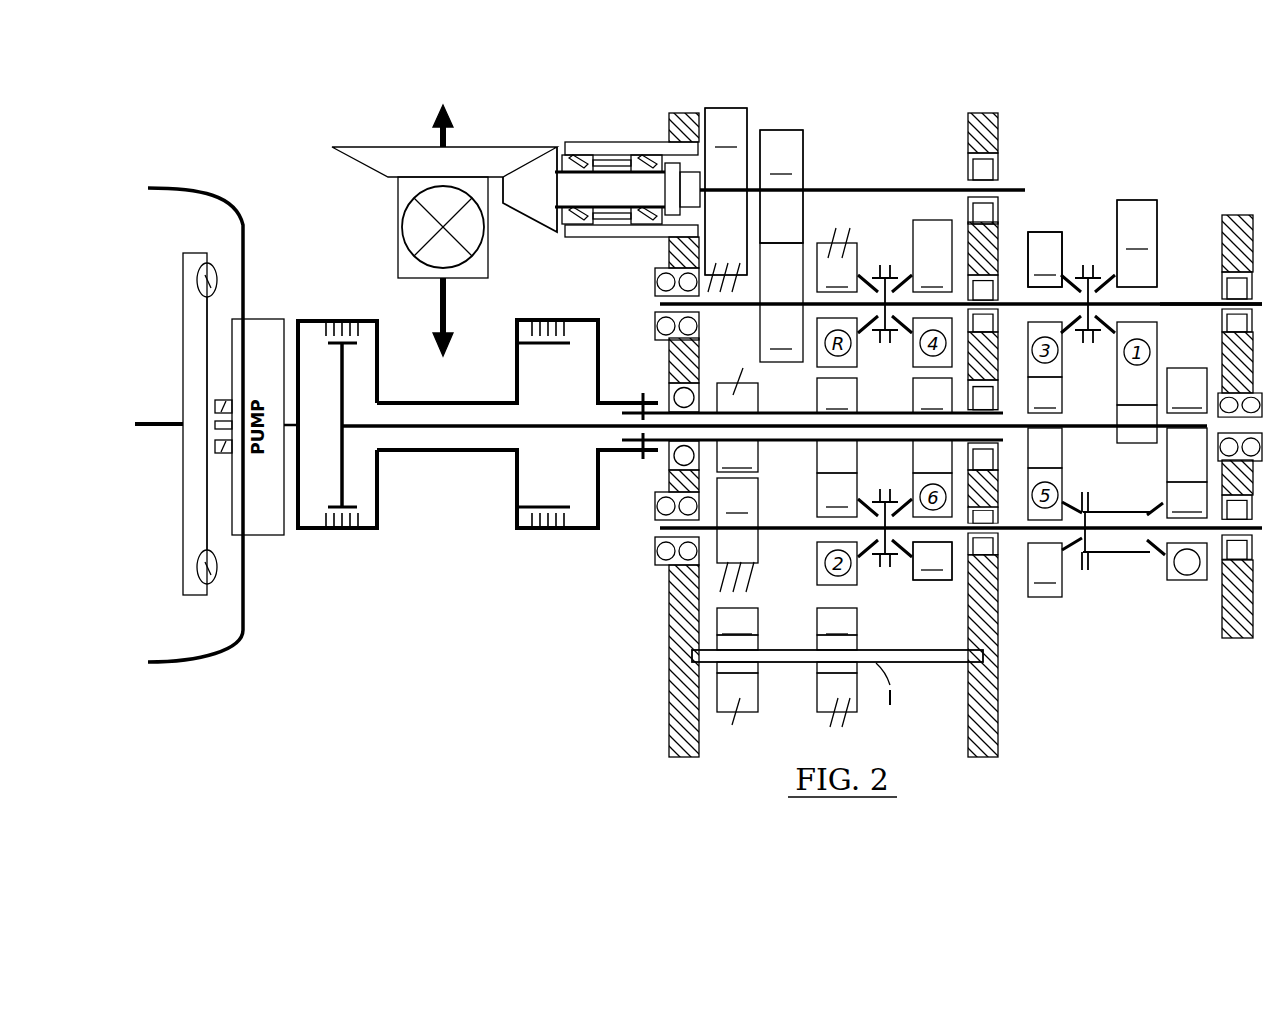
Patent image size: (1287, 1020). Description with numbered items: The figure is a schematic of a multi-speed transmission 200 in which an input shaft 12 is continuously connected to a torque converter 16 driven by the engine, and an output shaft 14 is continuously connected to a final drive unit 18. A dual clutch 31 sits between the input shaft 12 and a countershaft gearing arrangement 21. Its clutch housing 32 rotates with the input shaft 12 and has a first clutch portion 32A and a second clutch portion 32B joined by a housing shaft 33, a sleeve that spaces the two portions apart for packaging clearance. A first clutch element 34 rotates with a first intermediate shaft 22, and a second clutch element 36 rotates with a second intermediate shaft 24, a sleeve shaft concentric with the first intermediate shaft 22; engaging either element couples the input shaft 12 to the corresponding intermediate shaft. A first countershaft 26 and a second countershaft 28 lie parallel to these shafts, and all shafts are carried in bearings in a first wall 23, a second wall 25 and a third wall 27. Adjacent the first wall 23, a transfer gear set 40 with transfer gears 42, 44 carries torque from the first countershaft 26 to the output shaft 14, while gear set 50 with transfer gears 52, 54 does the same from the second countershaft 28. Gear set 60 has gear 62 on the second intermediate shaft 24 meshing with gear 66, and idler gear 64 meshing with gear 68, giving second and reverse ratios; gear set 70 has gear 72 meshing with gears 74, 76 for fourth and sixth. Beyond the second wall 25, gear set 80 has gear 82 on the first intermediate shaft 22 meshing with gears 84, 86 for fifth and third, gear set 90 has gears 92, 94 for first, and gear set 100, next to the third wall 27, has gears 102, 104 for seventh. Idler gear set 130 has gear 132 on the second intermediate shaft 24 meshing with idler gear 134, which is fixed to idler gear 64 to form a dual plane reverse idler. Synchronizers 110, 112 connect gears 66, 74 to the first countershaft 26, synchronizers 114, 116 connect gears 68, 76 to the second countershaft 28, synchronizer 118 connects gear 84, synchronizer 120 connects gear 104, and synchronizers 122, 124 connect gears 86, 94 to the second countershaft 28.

The multi-speed transmission 200 is at (300, 157).
The torque converter 16 is at (183, 520).
The input shaft 12 is at (292, 427).
The first clutch element 34 is at (340, 367).
The dual clutch 31 is at (352, 547).
The housing shaft 33 is at (473, 402).
The second clutch element 36 is at (570, 318).
The clutch housing 32 is at (403, 464).
The first clutch portion 32A is at (377, 530).
The second clutch portion 32B is at (516, 487).
The first intermediate shaft 22 is at (545, 427).
The final drive unit 18 is at (525, 118).
The output shaft 14 is at (920, 190).
The first support wall 23 is at (668, 602).
The second support wall 25 is at (1003, 722).
The third support wall 27 is at (1237, 640).
The gear set 60 is at (832, 216).
The second countershaft 28 is at (1183, 303).
The first countershaft 26 is at (778, 530).
The transfer gear 44 is at (740, 100).
The transfer gear set 40 is at (726, 191).
The transfer gear 54 is at (807, 117).
The gear set 50 is at (781, 186).
The transfer gear 52 is at (781, 302).
The gear 68 is at (837, 260).
The gear 76 is at (932, 256).
The synchronizer 116 is at (903, 273).
The synchronizer 114 is at (870, 337).
The gear 62 is at (837, 395).
The gear 72 is at (932, 395).
The second intermediate shaft 24 is at (708, 408).
The gear 132 is at (737, 456).
The transfer gear 42 is at (737, 535).
The gear 66 is at (837, 478).
The synchronizer 112 is at (900, 500).
The synchronizer 110 is at (872, 562).
The gear 74 is at (932, 561).
The gear set 70 is at (930, 592).
The idler gear set 130 is at (745, 724).
The idler gear 134 is at (737, 666).
The idler gear 64 is at (837, 667).
The countershaft gearing arrangement 21 is at (1045, 168).
The gear 86 is at (1045, 259).
The gear set 80 is at (1052, 228).
The gear 94 is at (1137, 243).
The gear set 90 is at (1141, 198).
The synchronizer 124 is at (1102, 270).
The synchronizer 122 is at (1072, 339).
The gear 82 is at (1045, 395).
The gear 92 is at (1133, 435).
The gear 102 is at (1187, 390).
The gear 104 is at (1187, 500).
The synchronizer 120 is at (1098, 500).
The synchronizer 118 is at (1073, 564).
The gear 84 is at (1045, 570).
The gear set 100 is at (1185, 598).